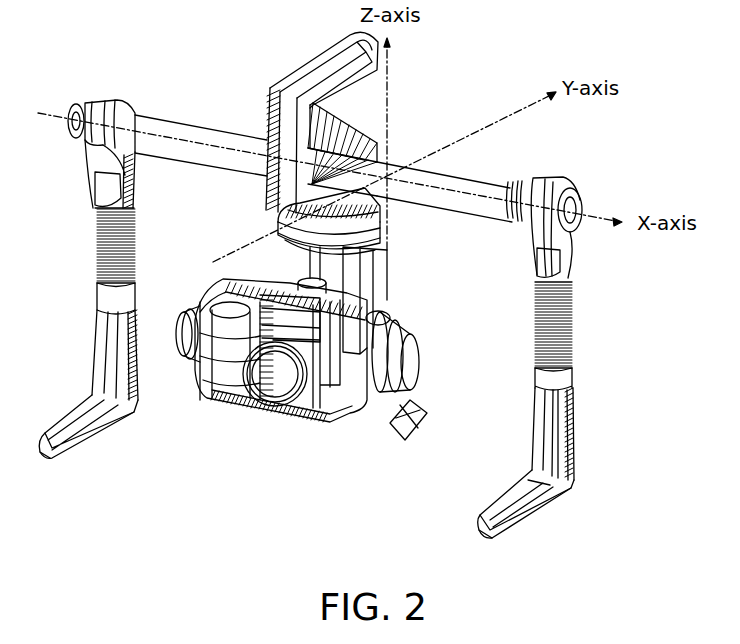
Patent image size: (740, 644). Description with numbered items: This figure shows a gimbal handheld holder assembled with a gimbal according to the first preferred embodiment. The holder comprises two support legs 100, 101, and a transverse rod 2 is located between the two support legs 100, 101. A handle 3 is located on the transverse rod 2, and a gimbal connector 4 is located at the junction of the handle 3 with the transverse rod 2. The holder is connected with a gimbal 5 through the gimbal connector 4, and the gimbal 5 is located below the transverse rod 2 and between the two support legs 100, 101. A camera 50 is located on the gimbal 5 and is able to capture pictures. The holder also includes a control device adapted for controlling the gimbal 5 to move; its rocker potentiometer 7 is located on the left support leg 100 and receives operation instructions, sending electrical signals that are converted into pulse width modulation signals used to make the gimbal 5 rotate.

The transverse rod 2 is at (195, 143).
The handle 3 is at (313, 126).
The gimbal connector 4 is at (382, 202).
The gimbal 5 is at (362, 233).
The rocker potentiometer 7 is at (552, 176).
The camera 50 is at (298, 418).
The support leg 100 is at (544, 374).
The support leg 101 is at (120, 297).